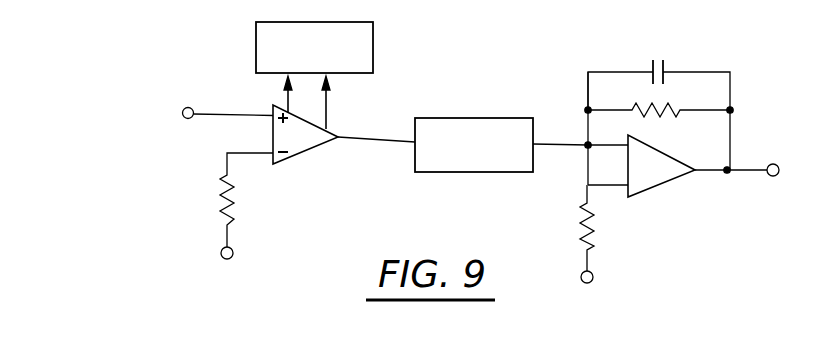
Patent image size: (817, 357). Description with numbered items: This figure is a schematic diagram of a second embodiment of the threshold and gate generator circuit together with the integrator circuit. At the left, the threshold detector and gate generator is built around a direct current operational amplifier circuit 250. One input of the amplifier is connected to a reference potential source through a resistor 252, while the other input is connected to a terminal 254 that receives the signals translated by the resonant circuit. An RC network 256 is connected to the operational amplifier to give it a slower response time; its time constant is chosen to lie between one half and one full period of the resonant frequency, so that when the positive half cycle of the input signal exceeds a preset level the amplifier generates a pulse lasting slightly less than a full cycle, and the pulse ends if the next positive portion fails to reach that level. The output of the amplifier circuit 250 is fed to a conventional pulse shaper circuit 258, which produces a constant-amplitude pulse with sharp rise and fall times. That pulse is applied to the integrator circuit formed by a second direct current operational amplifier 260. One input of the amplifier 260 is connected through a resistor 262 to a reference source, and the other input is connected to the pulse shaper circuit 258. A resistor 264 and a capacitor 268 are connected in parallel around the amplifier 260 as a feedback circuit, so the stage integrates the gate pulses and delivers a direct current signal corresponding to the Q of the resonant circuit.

The direct current operational amplifier circuit 250 is at (300, 156).
The resistor 252 is at (222, 211).
The terminal 254 is at (183, 109).
The RC network 256 is at (373, 61).
The pulse shaper circuit 258 is at (473, 172).
The direct current operational amplifier 260 is at (645, 190).
The resistor 262 is at (594, 225).
The resistor 264 is at (655, 113).
The capacitor 268 is at (660, 70).